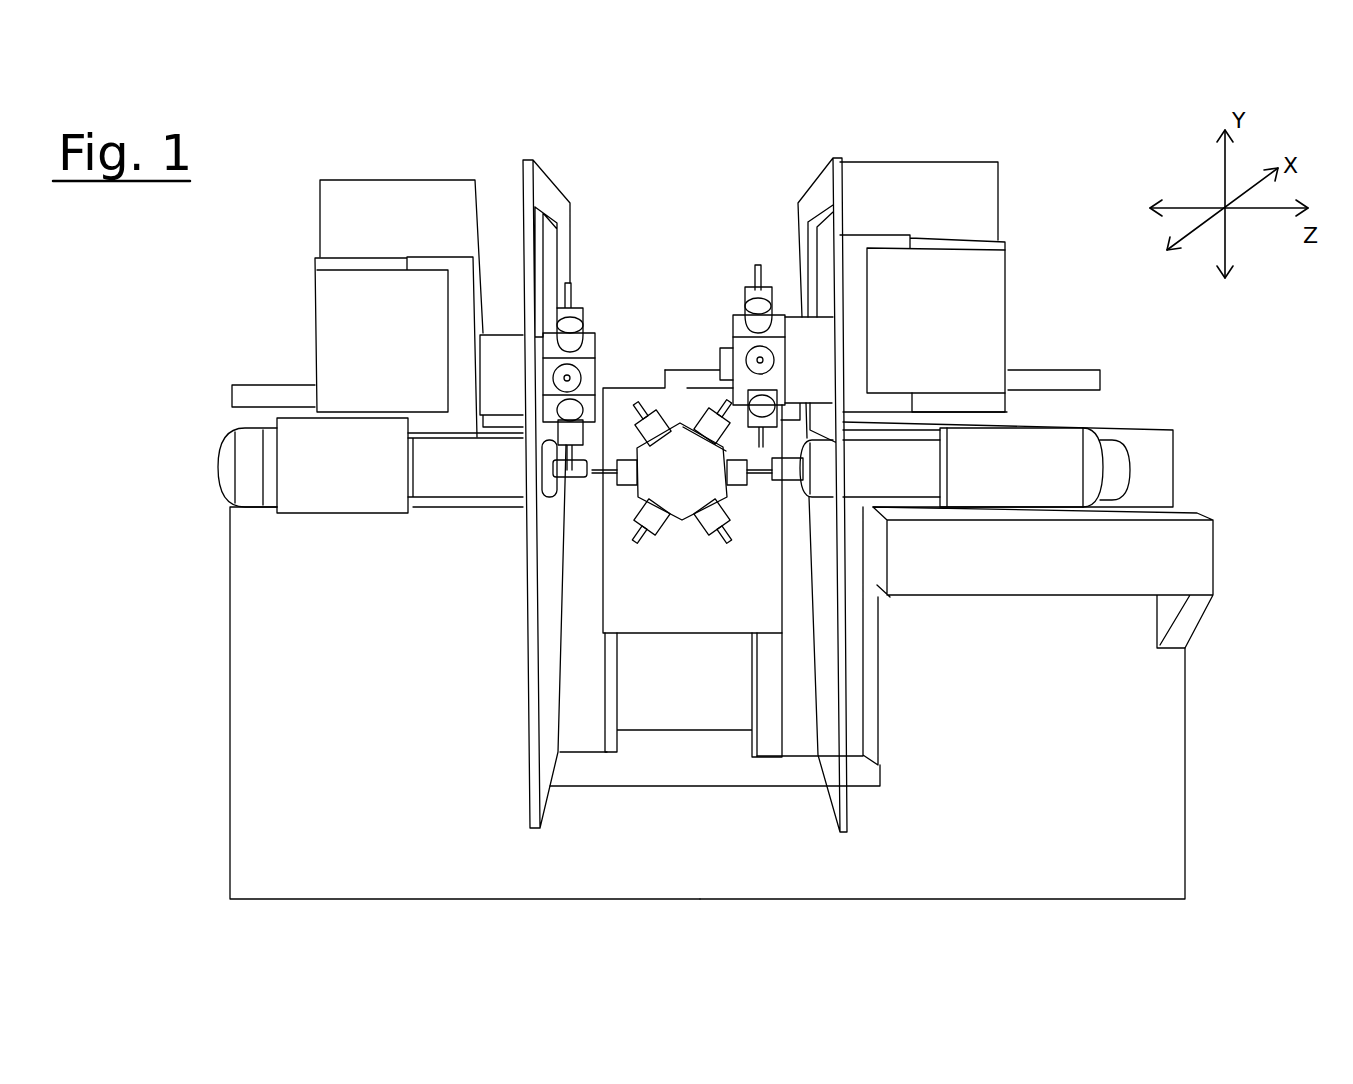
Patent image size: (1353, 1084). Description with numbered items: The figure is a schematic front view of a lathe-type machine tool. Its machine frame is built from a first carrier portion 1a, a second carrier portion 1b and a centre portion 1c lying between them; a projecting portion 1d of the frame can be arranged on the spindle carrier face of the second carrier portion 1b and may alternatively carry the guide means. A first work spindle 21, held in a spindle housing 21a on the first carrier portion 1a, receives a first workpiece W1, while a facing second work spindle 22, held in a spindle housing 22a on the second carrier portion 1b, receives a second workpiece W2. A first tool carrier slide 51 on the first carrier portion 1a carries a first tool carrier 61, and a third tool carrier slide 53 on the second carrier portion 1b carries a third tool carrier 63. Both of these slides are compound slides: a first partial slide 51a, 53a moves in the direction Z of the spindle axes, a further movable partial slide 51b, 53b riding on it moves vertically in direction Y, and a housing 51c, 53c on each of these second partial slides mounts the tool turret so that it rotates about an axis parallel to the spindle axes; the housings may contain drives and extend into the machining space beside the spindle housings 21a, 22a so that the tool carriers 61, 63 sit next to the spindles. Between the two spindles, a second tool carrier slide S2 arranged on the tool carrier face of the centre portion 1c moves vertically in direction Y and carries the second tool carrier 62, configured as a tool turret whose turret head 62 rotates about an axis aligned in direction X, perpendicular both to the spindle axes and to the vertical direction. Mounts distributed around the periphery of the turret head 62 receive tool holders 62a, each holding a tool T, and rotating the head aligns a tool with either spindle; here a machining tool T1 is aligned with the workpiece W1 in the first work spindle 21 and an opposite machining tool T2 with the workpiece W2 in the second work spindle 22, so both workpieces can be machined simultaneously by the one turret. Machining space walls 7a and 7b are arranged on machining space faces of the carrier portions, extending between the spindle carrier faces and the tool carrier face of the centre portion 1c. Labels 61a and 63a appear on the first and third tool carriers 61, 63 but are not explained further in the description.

The first carrier portion 1a is at (247, 785).
The second carrier portion 1b is at (1175, 827).
The centre portion 1c is at (670, 708).
The projecting portion 1d is at (1193, 555).
The machining space wall 7a is at (545, 196).
The machining space wall 7b is at (828, 742).
The first work spindle 21 is at (545, 478).
The spindle housing 21a is at (335, 490).
The second work spindle 22 is at (818, 480).
The spindle housing 22a is at (1027, 450).
The first tool carrier slide 51 is at (377, 249).
The first partial slide 51a is at (353, 203).
The movable partial slide 51b is at (427, 260).
The housing 51c is at (500, 335).
The third tool carrier slide 53 is at (938, 235).
The first partial slide 53a is at (875, 188).
The movable partial slide 53b is at (930, 242).
The housing 53c is at (808, 340).
The second tool carrier slide S2 is at (690, 615).
The first tool carrier 61 is at (605, 326).
The tool holder 61a is at (573, 400).
The second tool carrier 62 is at (676, 507).
The tool holder 62a is at (720, 510).
The third tool carrier 63 is at (725, 306).
The tool holder 63a is at (738, 323).
The tool T is at (578, 415).
The machining tool T1 is at (572, 480).
The machining tool T2 is at (758, 480).
The first workpiece W1 is at (577, 483).
The second workpiece W2 is at (788, 467).